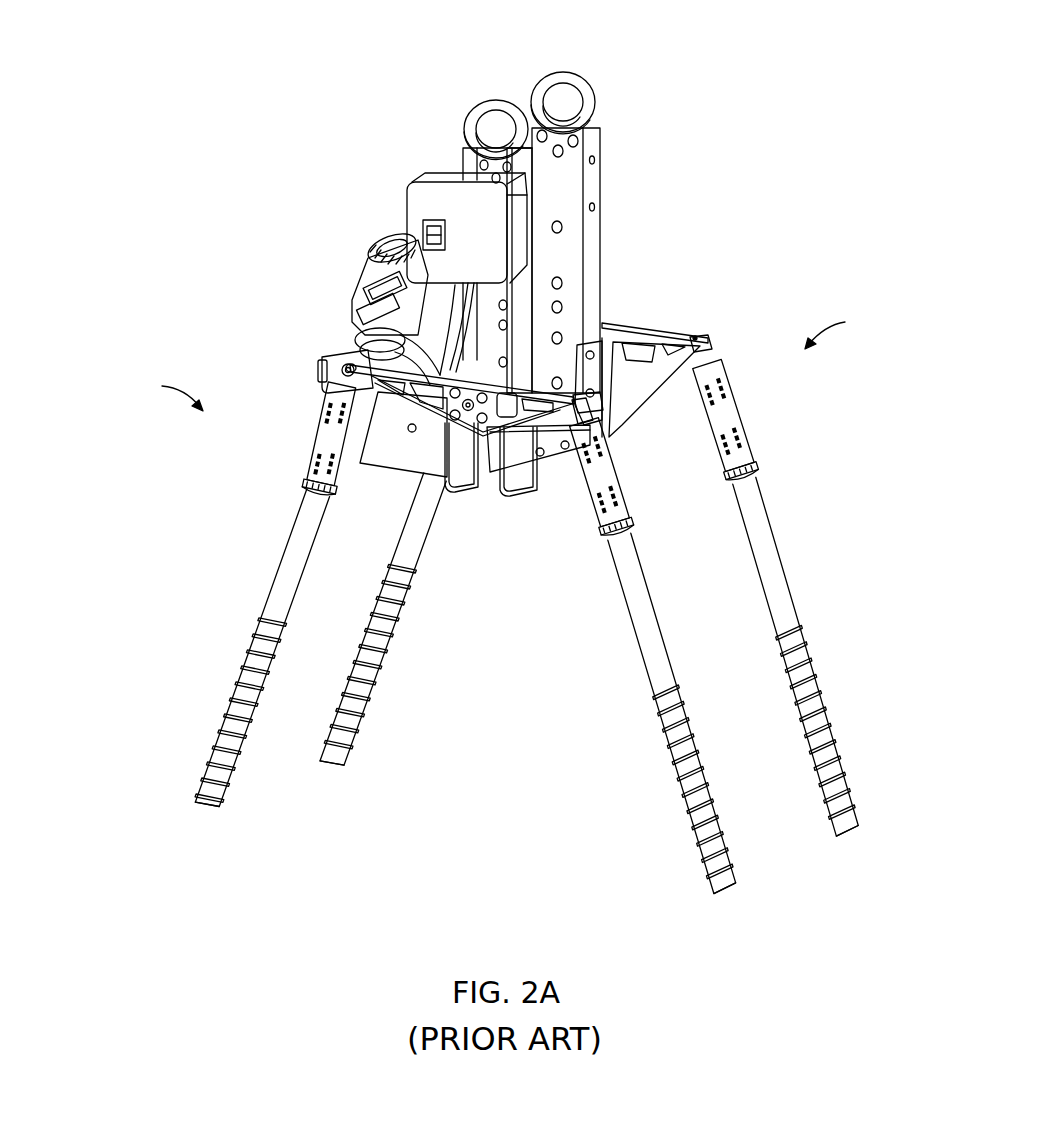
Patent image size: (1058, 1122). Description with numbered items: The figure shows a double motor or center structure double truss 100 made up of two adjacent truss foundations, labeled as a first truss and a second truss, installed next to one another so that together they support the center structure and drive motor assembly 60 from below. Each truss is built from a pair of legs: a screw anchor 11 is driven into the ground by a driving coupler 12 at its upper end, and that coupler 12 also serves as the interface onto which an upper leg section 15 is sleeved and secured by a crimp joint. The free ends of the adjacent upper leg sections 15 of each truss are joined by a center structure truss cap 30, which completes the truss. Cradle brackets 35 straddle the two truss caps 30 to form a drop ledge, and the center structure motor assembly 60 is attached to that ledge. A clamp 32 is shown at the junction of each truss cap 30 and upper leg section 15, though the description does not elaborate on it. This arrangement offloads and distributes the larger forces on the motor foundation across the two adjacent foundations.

The center structure double truss 100 is at (342, 47).
The drive motor assembly 60 is at (613, 86).
The center structure truss cap 30 is at (667, 318).
The clamp 32 is at (320, 362).
The upper leg section 15 is at (322, 432).
The driving coupler 12 is at (303, 482).
The screw anchor 11 is at (265, 583).
The cradle bracket 35 is at (463, 493).